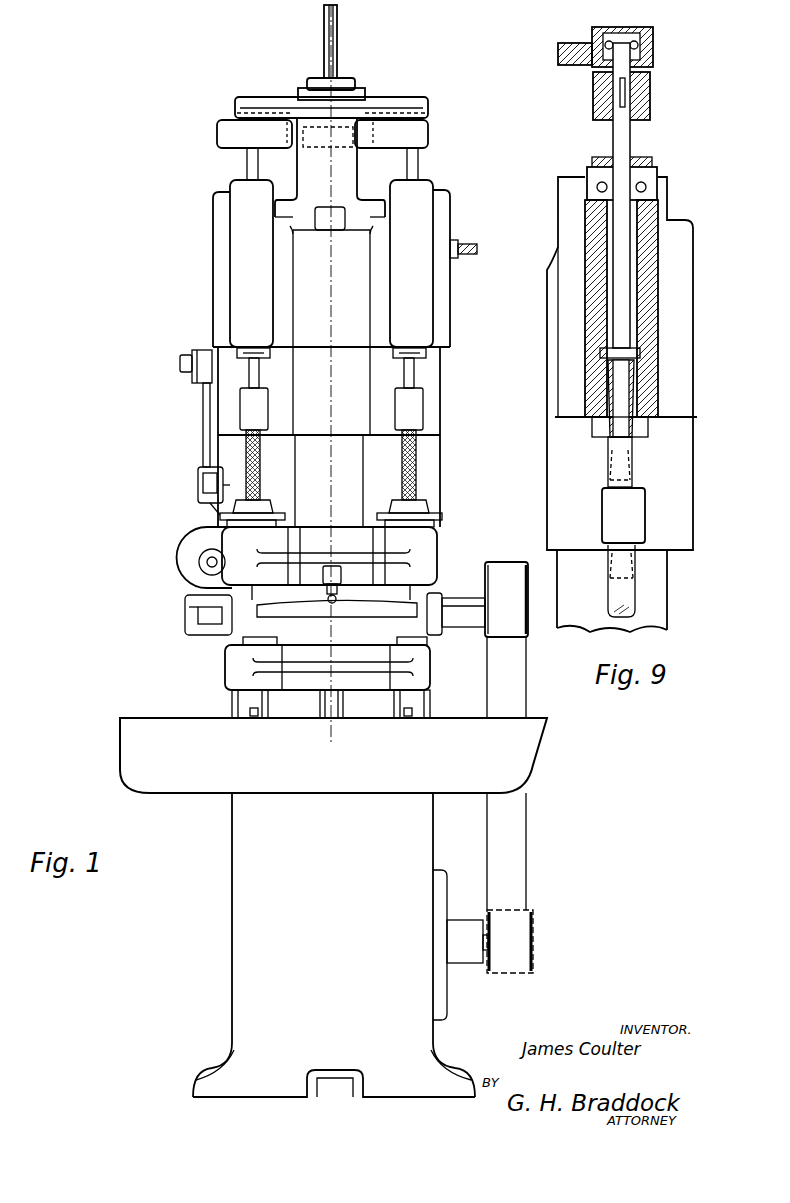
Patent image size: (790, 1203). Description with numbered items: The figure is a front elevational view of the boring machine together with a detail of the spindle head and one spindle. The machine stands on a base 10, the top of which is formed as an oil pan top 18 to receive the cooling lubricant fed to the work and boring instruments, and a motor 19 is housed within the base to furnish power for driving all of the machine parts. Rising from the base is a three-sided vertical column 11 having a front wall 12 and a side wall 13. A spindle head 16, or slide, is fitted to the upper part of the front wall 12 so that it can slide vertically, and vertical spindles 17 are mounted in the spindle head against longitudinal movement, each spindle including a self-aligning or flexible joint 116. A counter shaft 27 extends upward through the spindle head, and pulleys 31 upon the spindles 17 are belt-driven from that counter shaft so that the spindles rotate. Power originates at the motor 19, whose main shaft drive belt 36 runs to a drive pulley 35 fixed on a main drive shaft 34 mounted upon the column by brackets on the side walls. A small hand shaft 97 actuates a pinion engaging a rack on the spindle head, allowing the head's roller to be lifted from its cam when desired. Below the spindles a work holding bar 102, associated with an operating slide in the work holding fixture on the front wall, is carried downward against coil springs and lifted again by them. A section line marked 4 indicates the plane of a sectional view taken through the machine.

In FIG. 1, the section line 4- 4 is at (352, 4).
In FIG. 1, the base 10 is at (252, 913).
In FIG. 1, the vertical column 11 is at (300, 494).
In FIG. 1, the front wall 12 is at (430, 470).
In FIG. 9, the front wall 12 is at (657, 603).
In FIG. 1, the side wall 13 is at (440, 448).
In FIG. 1, the spindle head 16 is at (320, 283).
In FIG. 9, the spindle head 16 is at (677, 348).
In FIG. 1, the vertical spindles 17 is at (247, 163).
In FIG. 9, the vertical spindles 17 is at (625, 250).
In FIG. 1, the oil pan top 18 is at (445, 737).
In FIG. 1, the motor 19 is at (457, 934).
In FIG. 1, the counter shaft 27 is at (323, 42).
In FIG. 9, the pulleys 31 is at (652, 91).
In FIG. 1, the main drive shaft 34 is at (451, 598).
In FIG. 1, the drive pulley 35 is at (531, 640).
In FIG. 1, the main shaft drive belt 36 is at (520, 834).
In FIG. 1, the hand shaft 97 is at (462, 244).
In FIG. 1, the work holding bar 102 is at (262, 612).
In FIG. 9, the self-aligning or flexible joint 116 is at (627, 518).